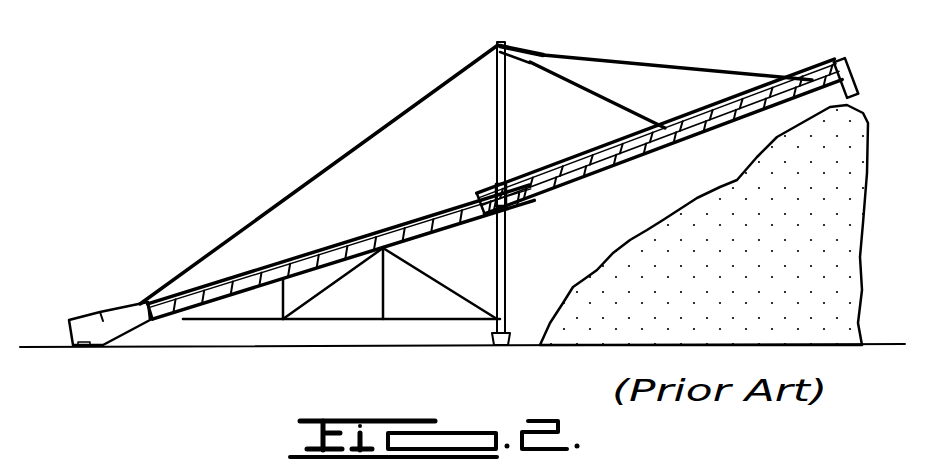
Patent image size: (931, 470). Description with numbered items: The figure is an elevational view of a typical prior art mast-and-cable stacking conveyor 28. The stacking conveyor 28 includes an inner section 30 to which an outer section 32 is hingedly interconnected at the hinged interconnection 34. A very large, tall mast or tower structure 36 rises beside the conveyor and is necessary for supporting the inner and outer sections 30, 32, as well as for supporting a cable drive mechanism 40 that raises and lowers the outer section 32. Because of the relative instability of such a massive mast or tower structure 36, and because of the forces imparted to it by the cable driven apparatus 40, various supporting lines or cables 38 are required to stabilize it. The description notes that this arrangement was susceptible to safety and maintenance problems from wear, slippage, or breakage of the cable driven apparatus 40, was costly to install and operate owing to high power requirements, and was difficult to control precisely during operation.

The stacking conveyor 28 is at (298, 128).
The inner section 30 is at (248, 273).
The outer section 32 is at (619, 165).
The hinged interconnection 34 is at (512, 206).
The mast or tower structure 36 is at (488, 141).
The supporting lines or cables 38 is at (266, 212).
The cable drive mechanism 40 is at (643, 55).